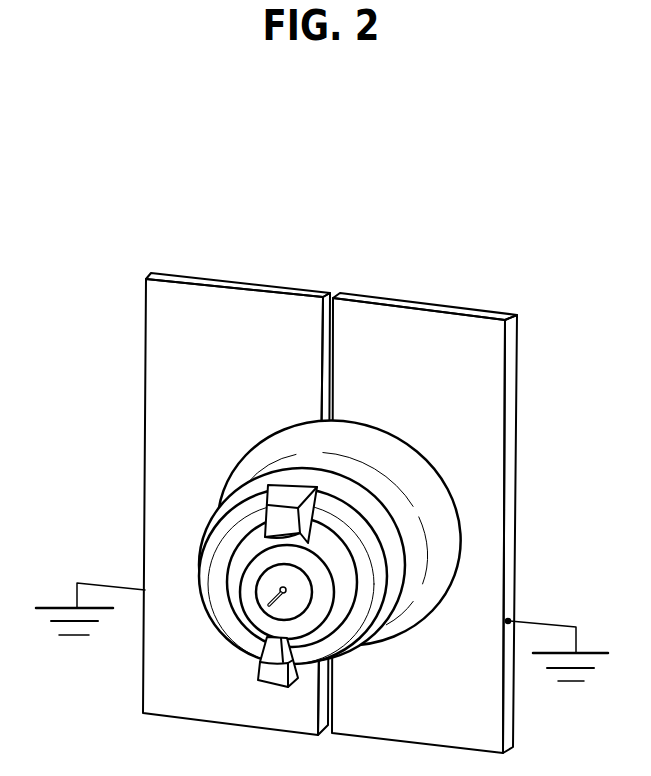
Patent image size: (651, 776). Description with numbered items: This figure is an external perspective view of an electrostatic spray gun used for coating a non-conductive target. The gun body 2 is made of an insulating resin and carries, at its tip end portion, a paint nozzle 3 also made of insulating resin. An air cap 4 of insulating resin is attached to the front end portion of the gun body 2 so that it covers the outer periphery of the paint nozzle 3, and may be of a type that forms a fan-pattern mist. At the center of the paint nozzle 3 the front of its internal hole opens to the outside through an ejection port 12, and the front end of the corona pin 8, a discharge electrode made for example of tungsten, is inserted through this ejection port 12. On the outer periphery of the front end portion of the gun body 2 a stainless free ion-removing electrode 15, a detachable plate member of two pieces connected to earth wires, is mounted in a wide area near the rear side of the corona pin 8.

The free ion-removing electrode 15 is at (197, 277).
The gun body 2 is at (412, 468).
The air cap 4 is at (213, 508).
The paint nozzle 3 is at (300, 598).
The corona pin 8 is at (272, 593).
The ejection port 12 is at (283, 586).